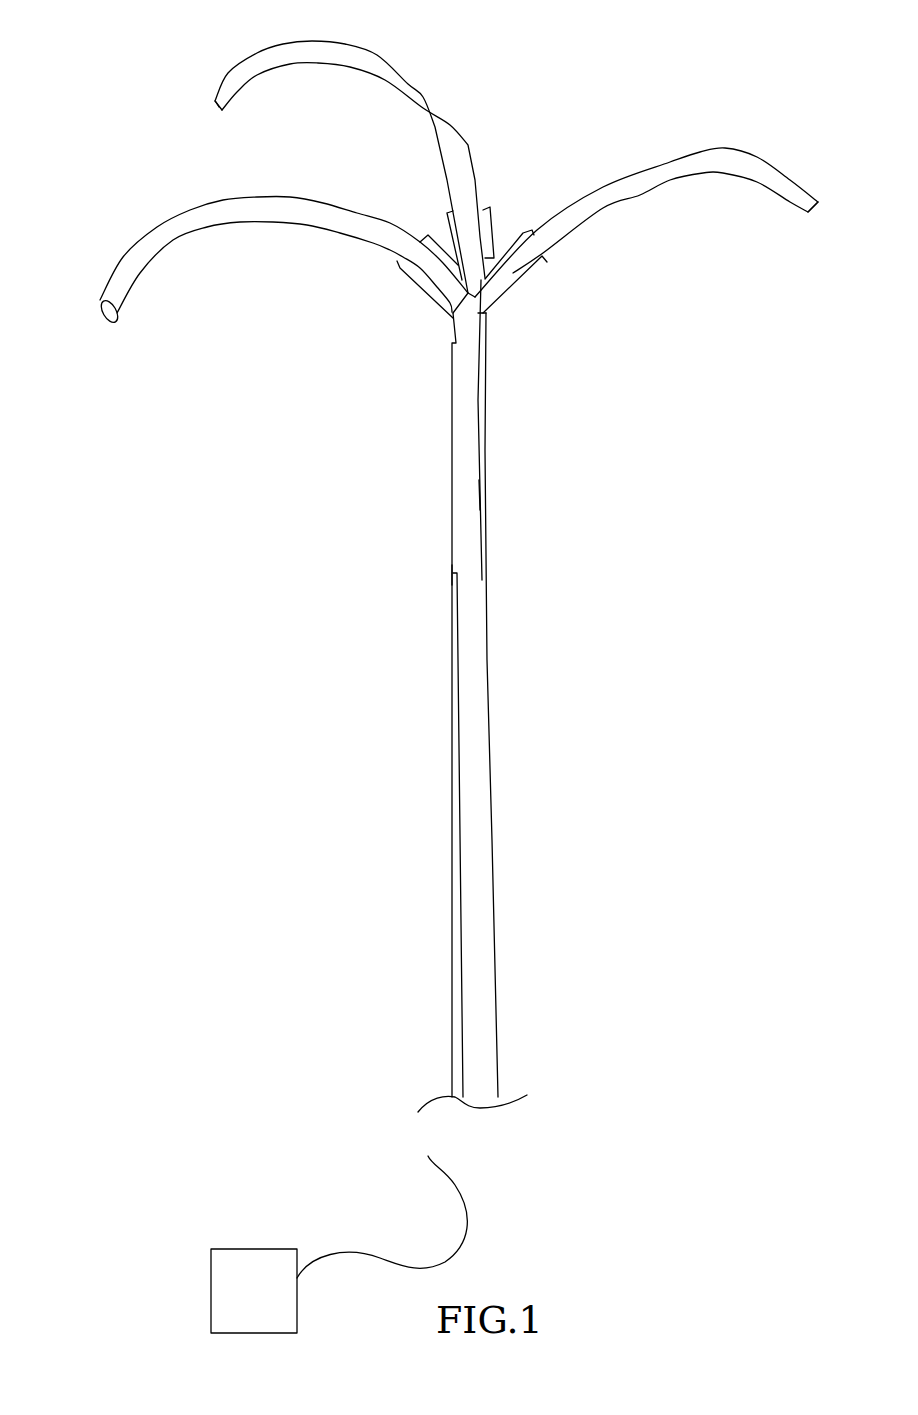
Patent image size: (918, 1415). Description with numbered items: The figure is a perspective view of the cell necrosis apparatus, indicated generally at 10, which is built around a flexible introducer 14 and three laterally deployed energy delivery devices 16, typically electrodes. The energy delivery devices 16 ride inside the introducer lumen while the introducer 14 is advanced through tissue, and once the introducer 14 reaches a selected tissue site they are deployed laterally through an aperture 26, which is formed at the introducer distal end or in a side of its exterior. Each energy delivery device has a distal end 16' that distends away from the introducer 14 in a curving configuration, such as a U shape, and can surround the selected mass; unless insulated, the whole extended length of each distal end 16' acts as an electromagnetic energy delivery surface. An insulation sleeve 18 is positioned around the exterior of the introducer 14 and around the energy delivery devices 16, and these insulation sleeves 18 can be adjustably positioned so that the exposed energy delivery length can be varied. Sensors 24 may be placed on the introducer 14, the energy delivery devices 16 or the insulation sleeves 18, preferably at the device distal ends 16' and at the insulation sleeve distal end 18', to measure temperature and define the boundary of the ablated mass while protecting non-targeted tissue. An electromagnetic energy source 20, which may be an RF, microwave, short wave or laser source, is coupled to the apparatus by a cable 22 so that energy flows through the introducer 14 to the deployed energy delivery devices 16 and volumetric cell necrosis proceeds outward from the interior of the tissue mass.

The tree-shaped fiber optic lighting device 10 is at (245, 617).
The flexible introducer 14 is at (480, 317).
The energy delivery device 16 is at (459, 160).
The energy delivery device distal end 16' is at (506, 151).
The insulation sleeve 18 is at (485, 592).
The insulation sleeve distal end 18' is at (523, 448).
The electromagnetic energy source 20 is at (242, 1249).
The cable 22 is at (468, 1226).
The sensor 24 is at (102, 304).
The aperture 26 is at (480, 496).